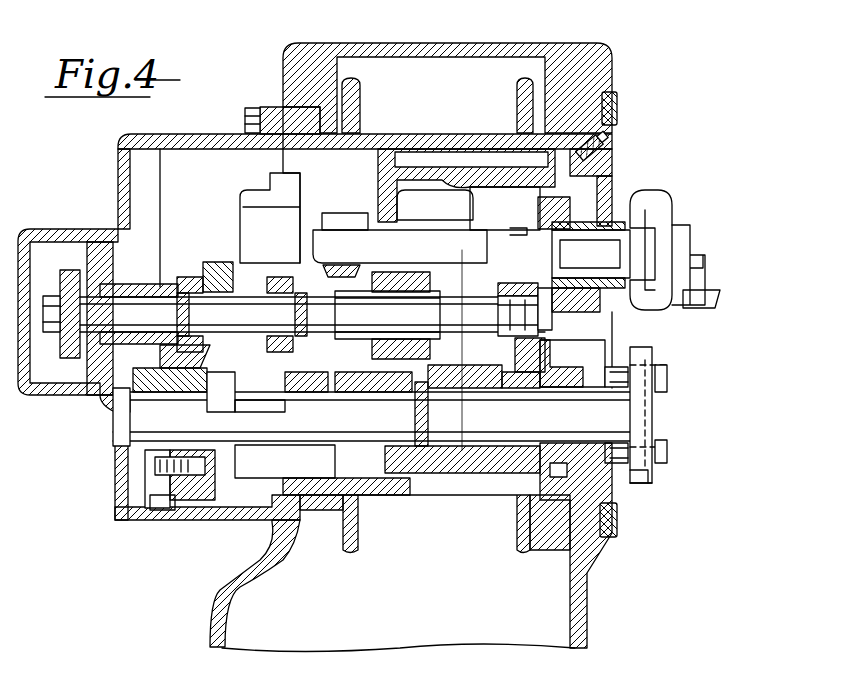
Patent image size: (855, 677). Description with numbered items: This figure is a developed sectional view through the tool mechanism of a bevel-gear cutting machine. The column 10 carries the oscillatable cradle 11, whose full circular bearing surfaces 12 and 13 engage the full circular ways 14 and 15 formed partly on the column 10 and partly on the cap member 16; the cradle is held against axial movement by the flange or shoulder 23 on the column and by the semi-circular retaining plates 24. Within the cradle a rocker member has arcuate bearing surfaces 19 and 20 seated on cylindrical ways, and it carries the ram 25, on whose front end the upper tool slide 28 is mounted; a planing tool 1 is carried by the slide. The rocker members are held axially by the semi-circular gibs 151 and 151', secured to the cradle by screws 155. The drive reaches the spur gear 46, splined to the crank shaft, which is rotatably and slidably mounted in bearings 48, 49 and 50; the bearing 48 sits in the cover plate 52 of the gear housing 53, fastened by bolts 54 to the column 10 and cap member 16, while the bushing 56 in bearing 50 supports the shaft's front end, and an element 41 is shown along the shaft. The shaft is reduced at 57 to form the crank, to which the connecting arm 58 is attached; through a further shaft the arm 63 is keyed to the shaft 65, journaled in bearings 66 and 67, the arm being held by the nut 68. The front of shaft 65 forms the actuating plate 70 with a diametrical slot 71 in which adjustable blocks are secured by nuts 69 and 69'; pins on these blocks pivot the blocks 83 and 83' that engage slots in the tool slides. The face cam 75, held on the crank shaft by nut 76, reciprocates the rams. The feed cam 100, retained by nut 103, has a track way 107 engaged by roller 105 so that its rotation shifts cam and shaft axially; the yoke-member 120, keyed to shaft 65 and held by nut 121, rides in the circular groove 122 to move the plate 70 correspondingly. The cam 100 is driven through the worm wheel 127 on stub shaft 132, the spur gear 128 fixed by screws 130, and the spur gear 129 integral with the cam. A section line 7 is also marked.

The tool 1 is at (705, 300).
The axis line 7 is at (462, 280).
The column 10 is at (225, 640).
The cradle 11 is at (510, 515).
The bearing surface 12 is at (310, 478).
The bearing surface 13 is at (617, 520).
The way 14 is at (300, 520).
The way 15 is at (560, 555).
The cap member 16 is at (470, 44).
The arcuate bearing surface 19 is at (385, 160).
The arcuate bearing surface 20 is at (548, 158).
The flange or shoulder 23 is at (540, 545).
The semi-circular retaining plate 24 is at (617, 540).
The ram 25 is at (426, 225).
The upper tool slide 28 is at (655, 205).
The shaft 41 is at (340, 340).
The spur gear 46 is at (75, 270).
The bearing 48 is at (132, 284).
The bearing 49 is at (395, 272).
The bearing 50 is at (542, 288).
The cover plate 52 is at (118, 195).
The gear housing 53 is at (198, 137).
The bolts 54 is at (252, 108).
The bushing 56 is at (588, 278).
The reduced diameter portion 57 is at (505, 283).
The connecting arm 58 is at (465, 368).
The arm 63 is at (505, 372).
The shaft 65 is at (553, 395).
The bearing 66 is at (360, 478).
The bearing 67 is at (500, 473).
The nut 68 is at (420, 455).
The nut 69 is at (648, 401).
The nut 69' is at (646, 430).
The actuating plate 70 is at (652, 483).
The diametrical slot 71 is at (650, 470).
The cam 75 is at (380, 372).
The nut 76 is at (295, 380).
The block 83 is at (682, 379).
The block 83' is at (680, 440).
The cam 100 is at (218, 262).
The nut 103 is at (187, 289).
The roller 105 is at (185, 293).
The track way 107 is at (230, 350).
The yoke-member 120 is at (280, 370).
The nut 121 is at (268, 420).
The circular groove 122 is at (280, 277).
The worm wheel 127 is at (150, 510).
The spur gear 128 is at (190, 483).
The spur gear 129 is at (212, 262).
The screws 130 is at (180, 505).
The stub shaft 132 is at (113, 440).
The gib 151 is at (619, 134).
The gib 151' is at (642, 507).
The screws 155 is at (612, 162).